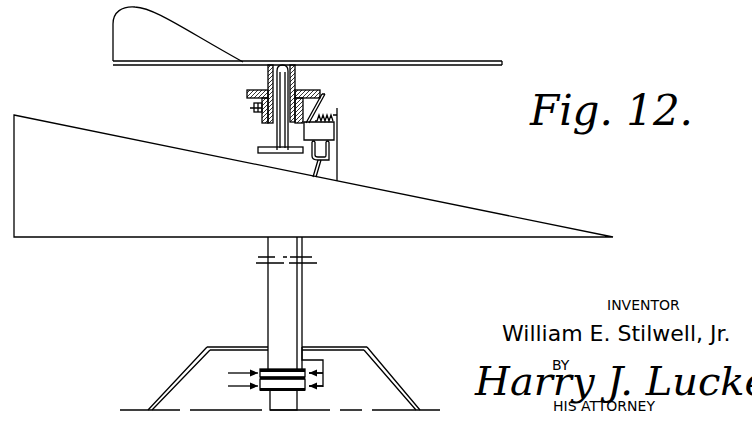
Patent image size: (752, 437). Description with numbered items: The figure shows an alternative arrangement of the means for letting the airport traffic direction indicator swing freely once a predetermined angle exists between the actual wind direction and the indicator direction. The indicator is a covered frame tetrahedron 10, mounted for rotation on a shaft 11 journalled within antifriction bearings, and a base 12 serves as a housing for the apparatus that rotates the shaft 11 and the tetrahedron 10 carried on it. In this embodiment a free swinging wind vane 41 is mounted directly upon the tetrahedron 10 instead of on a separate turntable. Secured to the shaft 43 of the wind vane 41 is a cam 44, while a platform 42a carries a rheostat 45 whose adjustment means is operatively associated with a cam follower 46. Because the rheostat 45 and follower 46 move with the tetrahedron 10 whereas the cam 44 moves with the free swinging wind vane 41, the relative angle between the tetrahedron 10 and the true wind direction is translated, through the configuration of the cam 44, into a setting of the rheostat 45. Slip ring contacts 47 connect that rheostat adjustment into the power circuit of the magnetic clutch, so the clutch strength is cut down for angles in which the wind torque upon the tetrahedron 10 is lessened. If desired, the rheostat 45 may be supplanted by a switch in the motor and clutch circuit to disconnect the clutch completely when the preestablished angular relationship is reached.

The tetrahedron 10 is at (456, 205).
The shaft 11 is at (273, 283).
The base 12 is at (326, 347).
The wind vane 41 is at (336, 41).
The platform 42a is at (337, 167).
The shaft 43 is at (283, 136).
The cam 44 is at (257, 92).
The rheostat 45 is at (328, 134).
The cam follower 46 is at (328, 88).
The slip ring contacts 47 is at (261, 367).